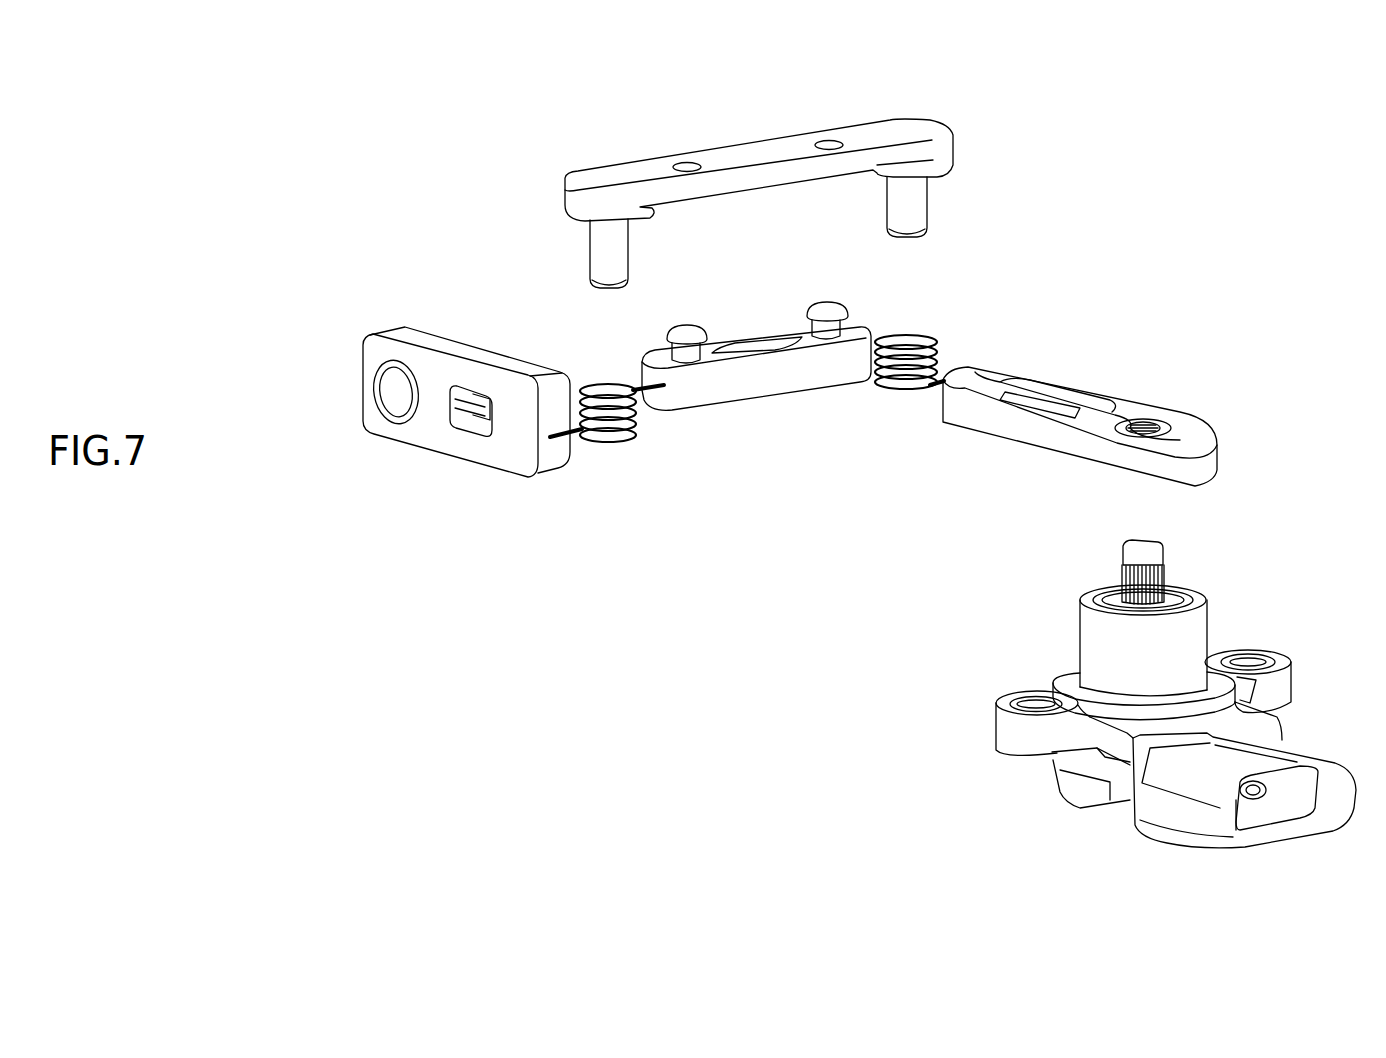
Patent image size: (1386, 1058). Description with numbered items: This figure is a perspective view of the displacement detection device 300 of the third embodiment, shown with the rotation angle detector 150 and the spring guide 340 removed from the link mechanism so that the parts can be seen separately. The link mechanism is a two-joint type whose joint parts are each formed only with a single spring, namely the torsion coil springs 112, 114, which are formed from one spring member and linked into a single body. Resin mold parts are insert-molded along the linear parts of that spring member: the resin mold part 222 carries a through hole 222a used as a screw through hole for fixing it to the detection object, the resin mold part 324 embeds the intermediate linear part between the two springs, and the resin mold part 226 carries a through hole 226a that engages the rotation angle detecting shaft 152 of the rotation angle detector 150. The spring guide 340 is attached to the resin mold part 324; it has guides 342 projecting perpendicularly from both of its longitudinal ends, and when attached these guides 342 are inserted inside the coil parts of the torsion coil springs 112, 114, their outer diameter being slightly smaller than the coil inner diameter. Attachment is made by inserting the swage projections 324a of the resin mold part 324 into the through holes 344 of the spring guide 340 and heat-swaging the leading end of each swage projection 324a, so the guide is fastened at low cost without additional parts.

The displacement detection device 300 is at (463, 28).
The spring guide 340 is at (760, 152).
The through hole 344 is at (687, 163).
The guide 342 is at (600, 247).
The resin mold part 222 is at (470, 350).
The through hole 222a is at (396, 388).
The torsion coil spring 112 is at (617, 435).
The resin mold part 324 is at (777, 378).
The swage projection 324a is at (823, 308).
The torsion coil spring 114 is at (903, 386).
The resin mold part 226 is at (1010, 430).
The through hole 226a is at (1143, 423).
The rotation angle detector 150 is at (1057, 813).
The rotation angle detecting shaft 152 is at (1162, 577).